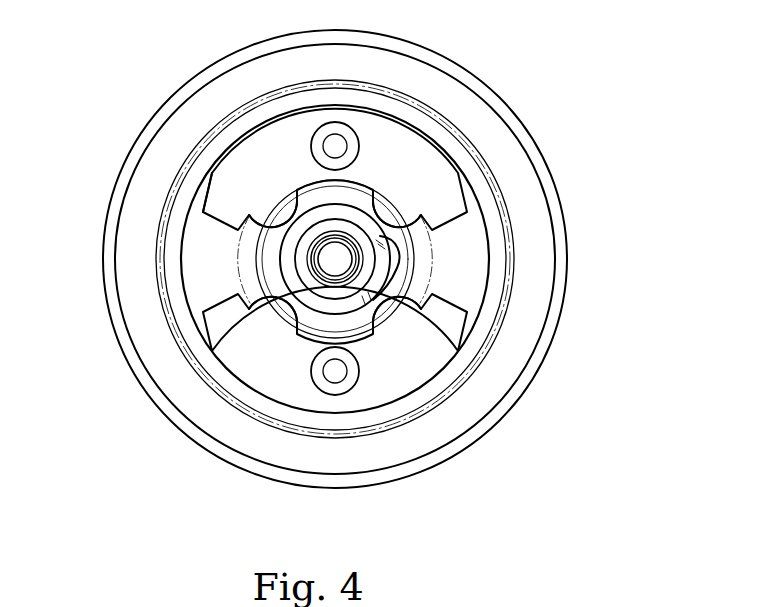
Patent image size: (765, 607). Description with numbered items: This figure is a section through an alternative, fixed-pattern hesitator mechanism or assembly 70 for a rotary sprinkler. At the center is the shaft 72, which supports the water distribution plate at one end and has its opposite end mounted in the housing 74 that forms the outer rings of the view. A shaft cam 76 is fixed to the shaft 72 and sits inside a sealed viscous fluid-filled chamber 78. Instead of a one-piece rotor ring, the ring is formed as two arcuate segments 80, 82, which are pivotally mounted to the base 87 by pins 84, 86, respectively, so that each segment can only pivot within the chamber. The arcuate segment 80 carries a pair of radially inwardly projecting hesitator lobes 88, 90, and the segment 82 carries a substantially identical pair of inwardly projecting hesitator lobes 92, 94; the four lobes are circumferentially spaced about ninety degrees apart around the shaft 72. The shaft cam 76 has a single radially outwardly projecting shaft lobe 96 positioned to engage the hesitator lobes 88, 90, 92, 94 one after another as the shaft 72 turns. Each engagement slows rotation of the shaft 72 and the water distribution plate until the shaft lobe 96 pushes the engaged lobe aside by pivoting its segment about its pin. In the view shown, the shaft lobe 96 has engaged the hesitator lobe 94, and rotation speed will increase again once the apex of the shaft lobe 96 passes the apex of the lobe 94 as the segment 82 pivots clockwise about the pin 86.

The hesitator mechanism or assembly 70 is at (523, 72).
The shaft 72 is at (340, 258).
The housing 74 is at (556, 170).
The shaft cam 76 is at (295, 248).
The sealed viscous fluid-filled chamber 78 is at (482, 228).
The arcuate segment 80 is at (385, 147).
The arcuate segment 82 is at (385, 375).
The pin 84 is at (338, 143).
The pin 86 is at (336, 378).
The base 87 is at (205, 243).
The hesitator lobe 88 is at (277, 212).
The hesitator lobe 90 is at (392, 208).
The hesitator lobe 92 is at (270, 308).
The hesitator lobe 94 is at (387, 312).
The shaft lobe 96 is at (395, 284).